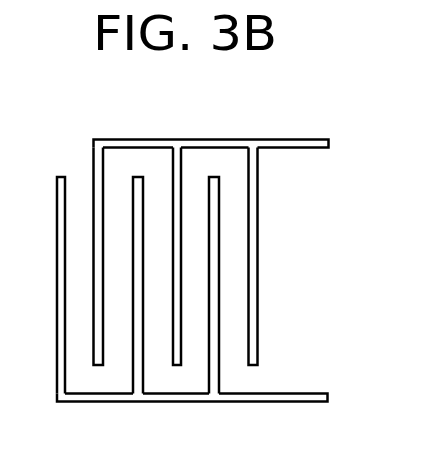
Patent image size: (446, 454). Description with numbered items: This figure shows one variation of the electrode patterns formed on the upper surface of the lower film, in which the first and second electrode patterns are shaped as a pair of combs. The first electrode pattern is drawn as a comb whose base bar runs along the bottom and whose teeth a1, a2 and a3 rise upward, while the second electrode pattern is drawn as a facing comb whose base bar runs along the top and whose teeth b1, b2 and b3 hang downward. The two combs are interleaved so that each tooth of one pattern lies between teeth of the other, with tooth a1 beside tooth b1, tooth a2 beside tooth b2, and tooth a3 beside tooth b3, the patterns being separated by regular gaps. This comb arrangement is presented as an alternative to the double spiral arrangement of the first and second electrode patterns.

The first electrode pattern tooth a1 is at (53, 176).
The first electrode pattern tooth a2 is at (127, 177).
The first electrode pattern tooth a3 is at (203, 177).
The second electrode pattern tooth b1 is at (92, 355).
The second electrode pattern tooth b2 is at (170, 355).
The second electrode pattern tooth b3 is at (245, 355).